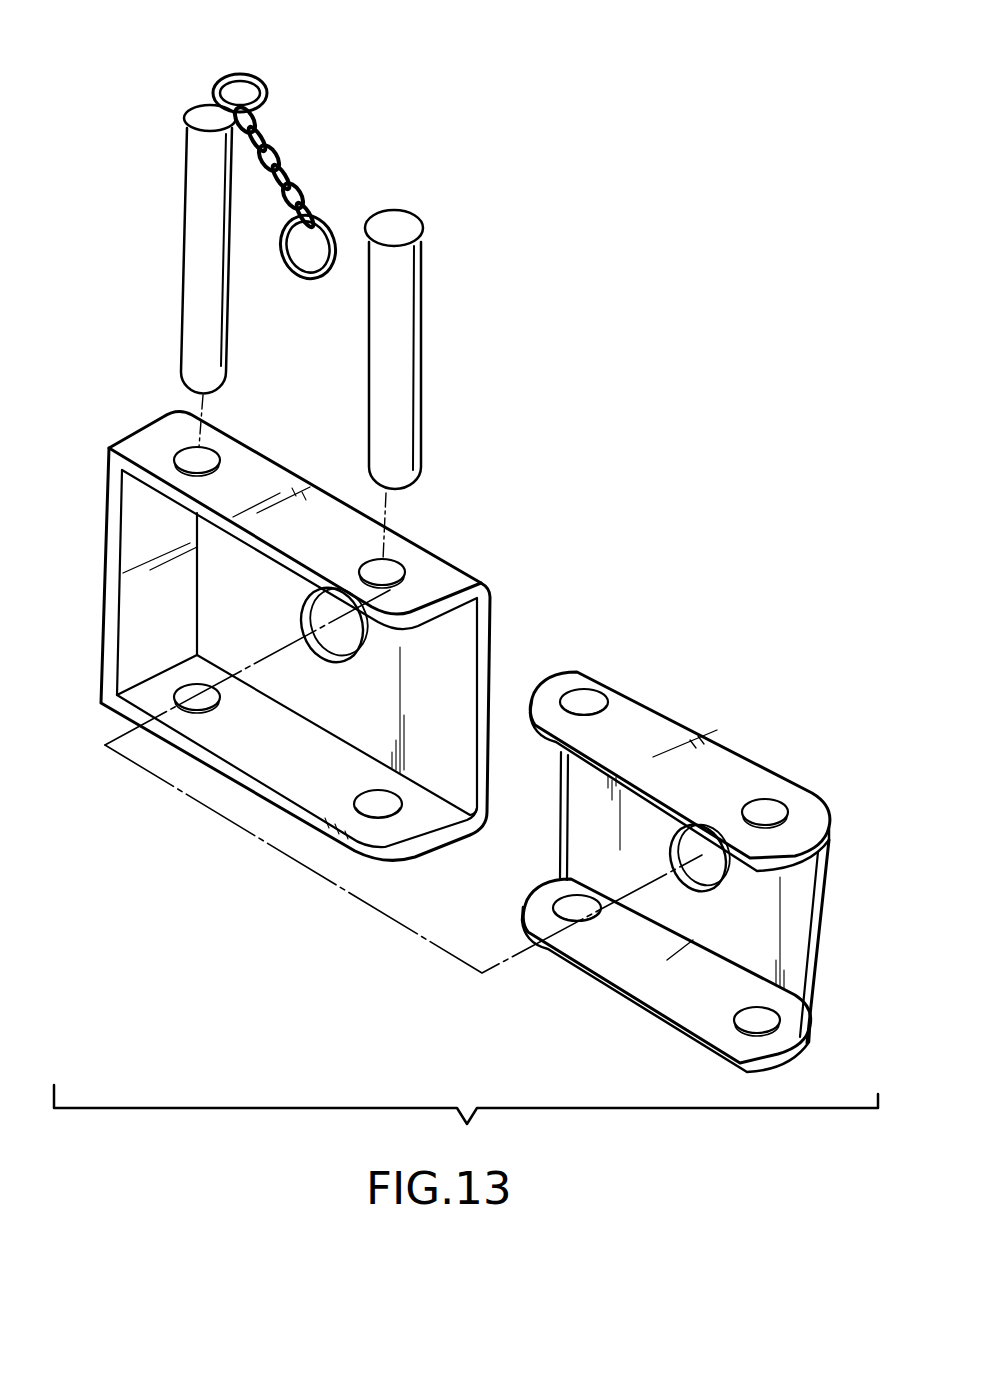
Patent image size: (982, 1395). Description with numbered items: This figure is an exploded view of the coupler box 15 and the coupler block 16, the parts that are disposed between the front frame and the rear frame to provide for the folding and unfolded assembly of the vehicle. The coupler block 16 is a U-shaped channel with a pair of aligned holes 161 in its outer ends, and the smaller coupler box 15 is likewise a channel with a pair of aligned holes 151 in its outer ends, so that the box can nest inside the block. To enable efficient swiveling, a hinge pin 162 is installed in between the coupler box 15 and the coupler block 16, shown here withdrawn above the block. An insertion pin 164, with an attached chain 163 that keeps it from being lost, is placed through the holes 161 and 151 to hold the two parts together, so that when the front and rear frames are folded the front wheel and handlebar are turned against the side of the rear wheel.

The coupler box 15 is at (747, 753).
The hole 151 is at (600, 693).
The coupler block 16 is at (487, 630).
The hole 161 is at (223, 452).
The hinge pin 162 is at (413, 383).
The chain 163 is at (297, 145).
The insertion pin 164 is at (228, 315).